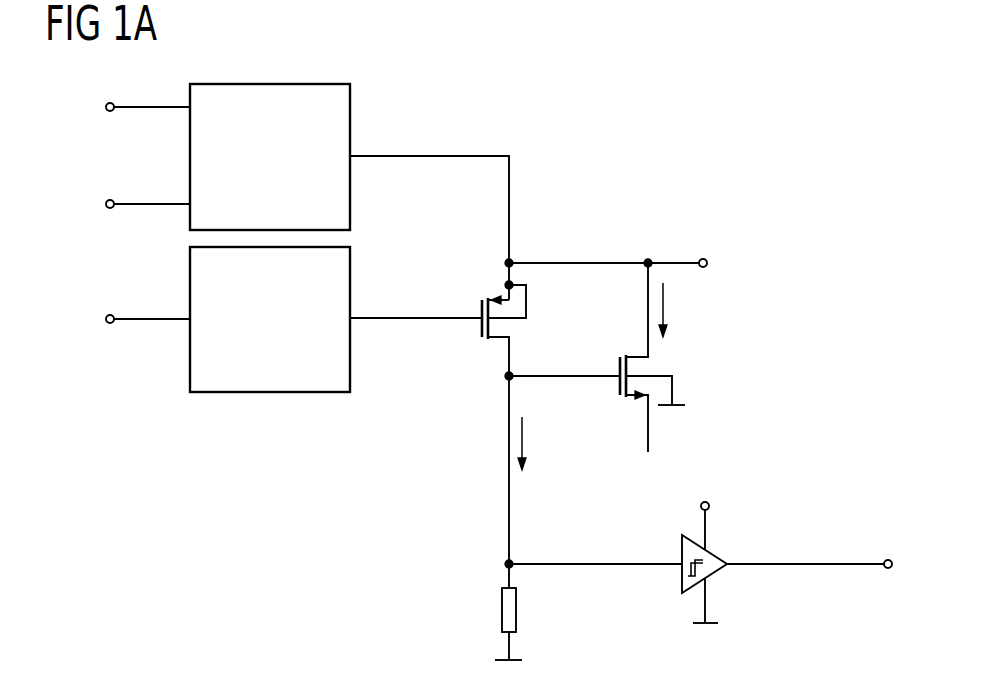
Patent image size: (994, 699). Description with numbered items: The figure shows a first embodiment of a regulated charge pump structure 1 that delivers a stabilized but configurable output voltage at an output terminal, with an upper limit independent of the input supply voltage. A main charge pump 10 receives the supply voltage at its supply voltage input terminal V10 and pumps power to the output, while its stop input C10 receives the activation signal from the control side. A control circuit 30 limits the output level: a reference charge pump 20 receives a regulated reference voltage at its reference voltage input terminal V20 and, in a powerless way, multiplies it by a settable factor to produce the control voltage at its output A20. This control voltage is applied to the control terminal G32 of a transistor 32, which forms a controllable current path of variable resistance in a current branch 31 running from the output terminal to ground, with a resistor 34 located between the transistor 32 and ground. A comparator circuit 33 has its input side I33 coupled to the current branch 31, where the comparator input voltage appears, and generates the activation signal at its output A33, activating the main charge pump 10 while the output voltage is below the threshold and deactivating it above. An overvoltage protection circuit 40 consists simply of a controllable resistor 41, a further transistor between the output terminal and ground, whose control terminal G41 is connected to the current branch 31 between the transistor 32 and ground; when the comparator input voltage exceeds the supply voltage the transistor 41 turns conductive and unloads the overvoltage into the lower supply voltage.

The regulated charge pump structure 1 is at (590, 160).
The main charge pump 10 is at (350, 128).
The reference charge pump 20 is at (272, 392).
The control circuit 30 is at (455, 490).
The current branch 31 is at (509, 500).
The transistor 32 is at (484, 298).
The comparator circuit 33 is at (715, 572).
The resistor 34 is at (502, 610).
The overvoltage protection circuit 40 is at (712, 360).
The controllable resistor 41 is at (622, 357).
The supply voltage input terminal V10 is at (136, 110).
The stop control input of main charge pump C10 is at (116, 206).
The reference voltage input terminal V20 is at (139, 323).
The output of reference charge pump A20 is at (373, 316).
The control terminal G32 is at (447, 316).
The control terminal G41 is at (585, 374).
The input side I33 is at (637, 562).
The output of comparator 33 A33 is at (818, 568).